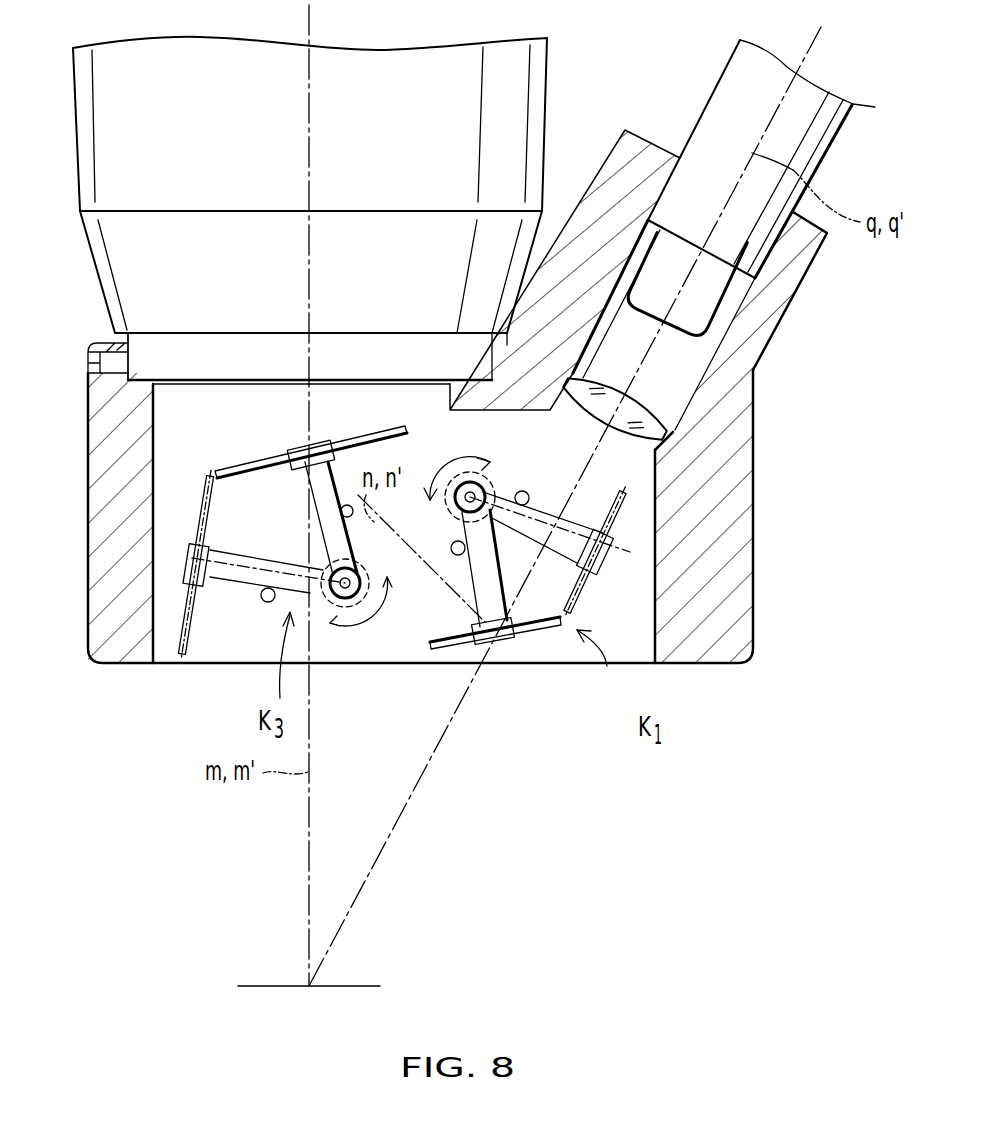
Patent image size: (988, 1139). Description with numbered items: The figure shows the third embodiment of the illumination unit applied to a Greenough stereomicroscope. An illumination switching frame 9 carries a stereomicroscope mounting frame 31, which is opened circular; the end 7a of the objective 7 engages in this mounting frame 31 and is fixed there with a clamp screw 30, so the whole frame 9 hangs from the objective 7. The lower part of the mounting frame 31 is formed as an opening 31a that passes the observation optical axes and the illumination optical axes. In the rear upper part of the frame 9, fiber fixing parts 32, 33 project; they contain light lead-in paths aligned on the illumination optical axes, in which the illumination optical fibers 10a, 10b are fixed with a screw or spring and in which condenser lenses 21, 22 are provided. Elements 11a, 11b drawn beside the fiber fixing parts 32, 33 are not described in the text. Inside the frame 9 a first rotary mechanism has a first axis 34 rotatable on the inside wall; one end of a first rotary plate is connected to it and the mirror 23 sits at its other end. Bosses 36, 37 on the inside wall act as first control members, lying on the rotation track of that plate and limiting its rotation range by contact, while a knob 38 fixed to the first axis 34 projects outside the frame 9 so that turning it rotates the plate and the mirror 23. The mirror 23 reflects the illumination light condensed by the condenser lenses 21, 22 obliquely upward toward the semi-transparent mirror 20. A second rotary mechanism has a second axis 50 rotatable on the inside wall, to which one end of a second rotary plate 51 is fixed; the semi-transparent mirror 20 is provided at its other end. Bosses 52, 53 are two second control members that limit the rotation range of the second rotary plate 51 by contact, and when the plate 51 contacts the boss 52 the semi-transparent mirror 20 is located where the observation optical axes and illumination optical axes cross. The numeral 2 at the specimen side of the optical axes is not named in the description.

The object surface / reference plane 2 is at (347, 986).
The objective 7 is at (90, 145).
The end of the objective 7a is at (167, 347).
The illumination switching frame 9 is at (97, 623).
The illumination optical fiber 10a is at (791, 159).
The illumination optical fiber 10b is at (838, 130).
The lens holder 11a is at (752, 306).
The lens holder 11b is at (673, 337).
The semi-transparent mirror 20 is at (252, 463).
The condenser lens 21 is at (713, 434).
The condenser lens 22 is at (645, 408).
The mirror 23 is at (586, 602).
The clamp screw 30 is at (100, 363).
The stereomicroscope mounting frame 31 is at (490, 364).
The opening 31a is at (158, 648).
The fiber fixing part 32 is at (670, 280).
The fiber fixing part 33 is at (777, 253).
The first axis 34 is at (478, 490).
The boss 36 is at (489, 626).
The boss 37 is at (528, 496).
The knob 38 is at (440, 598).
The second axis 50 is at (357, 566).
The second rotary plate 51 is at (330, 528).
The boss 52 is at (343, 488).
The boss 53 is at (263, 600).